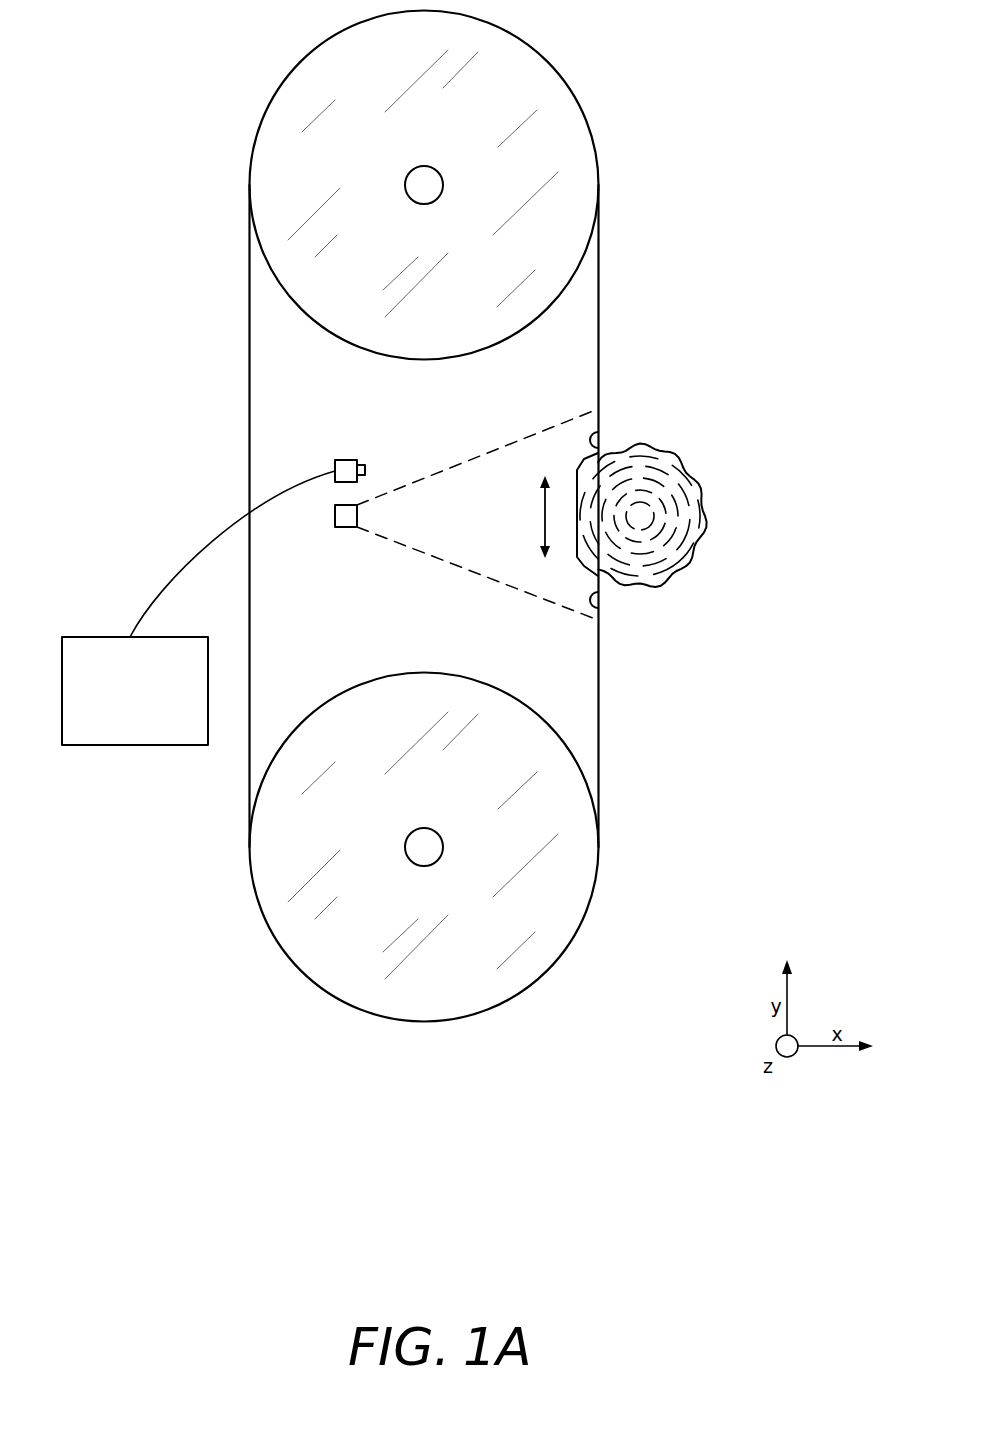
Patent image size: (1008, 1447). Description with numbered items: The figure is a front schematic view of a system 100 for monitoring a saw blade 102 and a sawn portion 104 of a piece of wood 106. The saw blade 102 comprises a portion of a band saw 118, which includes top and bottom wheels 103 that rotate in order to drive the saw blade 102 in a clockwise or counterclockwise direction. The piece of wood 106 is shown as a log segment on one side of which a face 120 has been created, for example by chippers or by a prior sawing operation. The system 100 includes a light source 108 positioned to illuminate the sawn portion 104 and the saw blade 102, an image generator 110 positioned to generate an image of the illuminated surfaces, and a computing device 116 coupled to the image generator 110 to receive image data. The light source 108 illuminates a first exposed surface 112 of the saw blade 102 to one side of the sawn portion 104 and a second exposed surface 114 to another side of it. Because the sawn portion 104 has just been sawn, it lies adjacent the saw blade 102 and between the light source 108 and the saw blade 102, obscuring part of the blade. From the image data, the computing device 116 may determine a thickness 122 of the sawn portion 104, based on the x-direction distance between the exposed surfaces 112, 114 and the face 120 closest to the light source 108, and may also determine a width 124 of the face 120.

The system 100 is at (292, 446).
The saw blade 102 is at (600, 302).
The top and bottom wheels 103 is at (533, 83).
The sawn portion 104 is at (579, 582).
The piece of wood 106 is at (711, 459).
The light source 108 is at (342, 528).
The image generator 110 is at (347, 460).
The first exposed surface 112 is at (600, 436).
The second exposed surface 114 is at (600, 615).
The computing device 116 is at (118, 746).
The band saw 118 is at (486, 516).
The face 120 is at (576, 546).
The thickness 122 is at (597, 427).
The width 124 is at (540, 517).